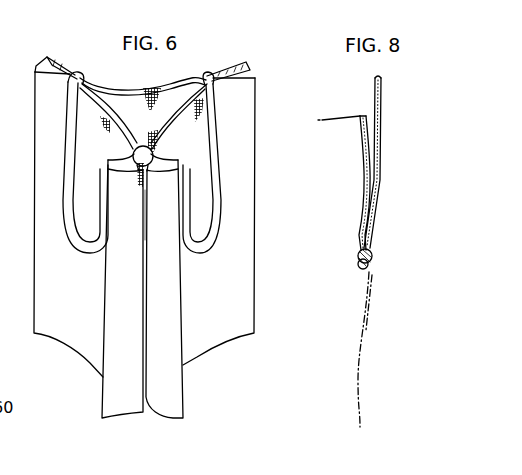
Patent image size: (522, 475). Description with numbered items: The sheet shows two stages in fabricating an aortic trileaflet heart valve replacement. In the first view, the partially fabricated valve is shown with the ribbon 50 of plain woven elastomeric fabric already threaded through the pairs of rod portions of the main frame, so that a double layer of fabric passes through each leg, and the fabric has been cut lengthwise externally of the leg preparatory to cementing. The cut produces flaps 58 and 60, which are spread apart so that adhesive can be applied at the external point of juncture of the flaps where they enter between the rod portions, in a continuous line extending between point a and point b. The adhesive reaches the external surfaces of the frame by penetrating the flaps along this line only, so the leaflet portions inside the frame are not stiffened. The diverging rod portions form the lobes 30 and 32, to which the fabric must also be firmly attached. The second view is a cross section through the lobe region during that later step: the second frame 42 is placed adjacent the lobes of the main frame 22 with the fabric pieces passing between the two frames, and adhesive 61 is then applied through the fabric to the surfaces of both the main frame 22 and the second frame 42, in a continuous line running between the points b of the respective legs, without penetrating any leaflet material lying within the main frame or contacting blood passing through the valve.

In FIG. 6, the ribbon 50 is at (260, 177).
In FIG. 8, the ribbon 50 is at (357, 204).
In FIG. 6, the lobe 30 is at (92, 257).
In FIG. 6, the lobe 32 is at (208, 258).
In FIG. 6, the flap 58 is at (107, 306).
In FIG. 6, the flap 60 is at (183, 307).
In FIG. 6, the point a is at (133, 152).
In FIG. 6, the point b is at (145, 215).
In FIG. 8, the main frame 22 is at (372, 233).
In FIG. 8, the adhesive 61 is at (373, 262).
In FIG. 8, the second frame 42 is at (357, 277).